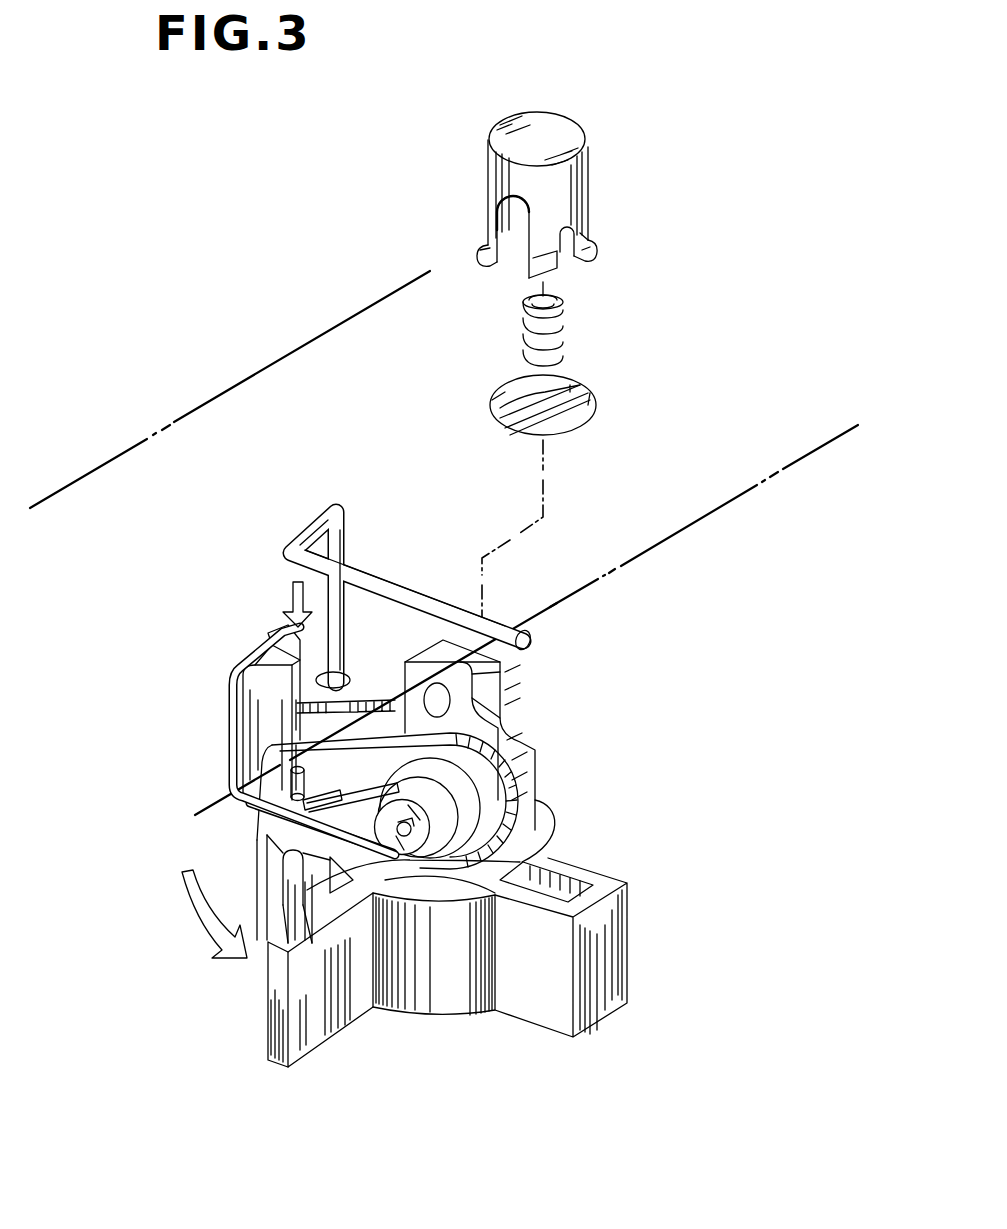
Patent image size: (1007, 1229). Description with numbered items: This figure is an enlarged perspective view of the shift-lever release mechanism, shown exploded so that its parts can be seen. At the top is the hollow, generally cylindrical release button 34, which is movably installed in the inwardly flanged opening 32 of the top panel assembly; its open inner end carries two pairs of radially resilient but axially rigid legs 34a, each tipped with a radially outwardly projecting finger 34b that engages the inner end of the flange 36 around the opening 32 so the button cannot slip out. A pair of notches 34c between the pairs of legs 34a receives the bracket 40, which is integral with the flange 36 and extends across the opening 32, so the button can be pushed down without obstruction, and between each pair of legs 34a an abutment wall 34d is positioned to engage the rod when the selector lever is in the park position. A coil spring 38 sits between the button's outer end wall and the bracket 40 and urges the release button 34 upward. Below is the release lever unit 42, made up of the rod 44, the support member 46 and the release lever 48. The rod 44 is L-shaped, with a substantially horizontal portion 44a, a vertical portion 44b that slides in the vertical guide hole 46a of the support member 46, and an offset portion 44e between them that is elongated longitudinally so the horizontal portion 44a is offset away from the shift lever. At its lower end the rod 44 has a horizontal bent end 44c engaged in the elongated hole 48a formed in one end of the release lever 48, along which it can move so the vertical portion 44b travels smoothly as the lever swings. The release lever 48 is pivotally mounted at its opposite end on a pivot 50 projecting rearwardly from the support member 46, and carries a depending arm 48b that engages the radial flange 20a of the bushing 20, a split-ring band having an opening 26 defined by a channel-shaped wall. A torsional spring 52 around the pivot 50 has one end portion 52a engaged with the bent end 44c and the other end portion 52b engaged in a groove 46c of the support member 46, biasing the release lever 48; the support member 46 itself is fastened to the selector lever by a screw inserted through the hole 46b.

The bushing 20 is at (470, 984).
The radial flange 20a is at (285, 1032).
The opening 26 is at (585, 895).
The opening 32 is at (500, 395).
The release button 34 is at (548, 140).
The legs 34a is at (486, 232).
The fingers 34b is at (478, 250).
The notches 34c is at (492, 215).
The abutment wall 34d is at (588, 225).
The flange 36 is at (588, 392).
The coil spring 38 is at (575, 330).
The bracket 40 is at (560, 420).
The release lever unit 42 is at (610, 764).
The rod 44 is at (390, 578).
The horizontal portion 44a is at (425, 600).
The vertical portion 44b is at (340, 530).
The horizontal bent end 44c is at (257, 840).
The offset portion 44e is at (320, 515).
The support member 46 is at (505, 682).
The vertical guide hole 46a is at (268, 660).
The hole 46b is at (440, 705).
The groove 46c is at (283, 650).
The release lever 48 is at (272, 761).
The elongated hole 48a is at (292, 792).
The depending arm 48b is at (278, 948).
The pivot 50 is at (398, 842).
The torsional spring 52 is at (361, 806).
The end portion 52a is at (365, 945).
The other end portion 52b is at (235, 672).